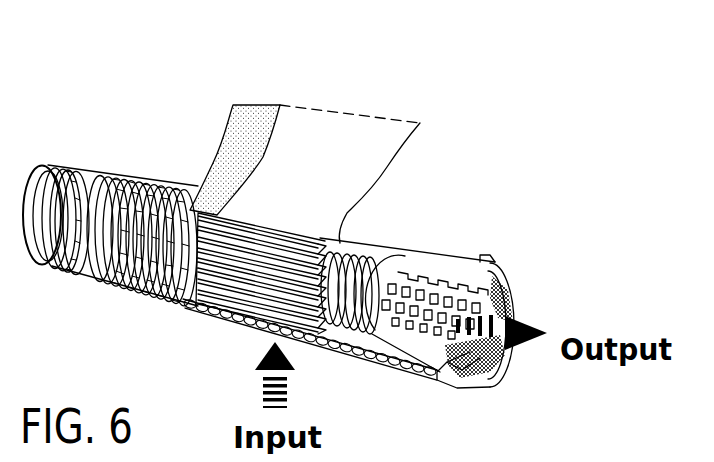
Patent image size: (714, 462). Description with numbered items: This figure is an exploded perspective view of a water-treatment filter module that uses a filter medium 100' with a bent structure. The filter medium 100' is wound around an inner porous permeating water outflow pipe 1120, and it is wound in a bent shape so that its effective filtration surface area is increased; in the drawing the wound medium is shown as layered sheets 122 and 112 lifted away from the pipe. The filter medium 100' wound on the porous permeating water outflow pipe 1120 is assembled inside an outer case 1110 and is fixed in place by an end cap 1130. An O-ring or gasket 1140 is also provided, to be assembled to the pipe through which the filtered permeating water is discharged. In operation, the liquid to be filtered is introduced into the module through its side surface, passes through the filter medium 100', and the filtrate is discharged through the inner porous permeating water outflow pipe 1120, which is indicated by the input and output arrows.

The filter medium 100' is at (305, 123).
The second sheet 122 is at (255, 108).
The first sheet 112 is at (363, 118).
The outer case 1110 is at (380, 250).
The inner porous permeating water outflow pipe 1120 is at (132, 283).
The end cap 1130 is at (413, 373).
The O-ring or gasket 1140 is at (483, 373).